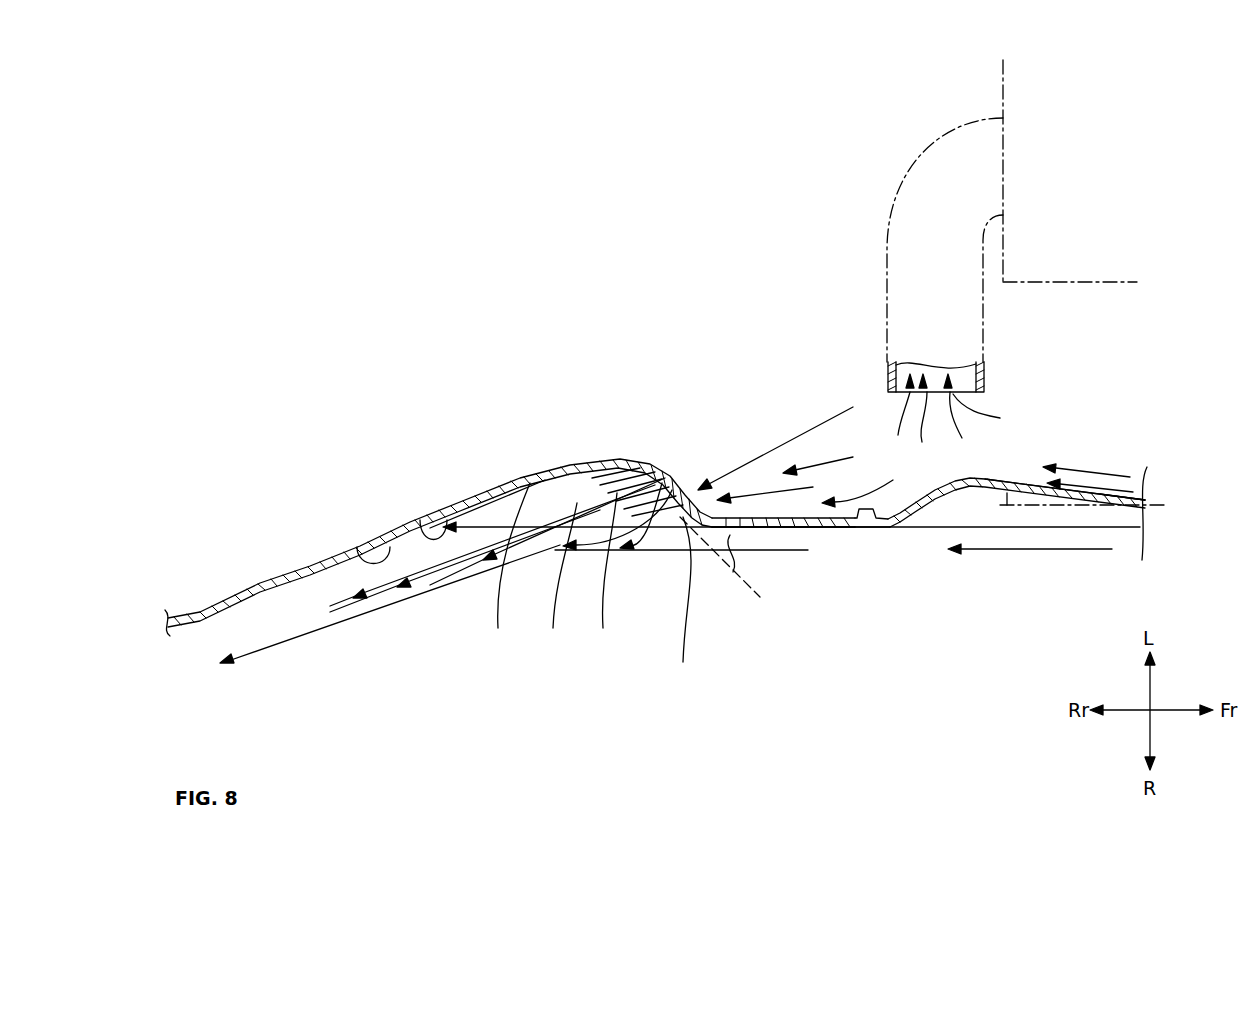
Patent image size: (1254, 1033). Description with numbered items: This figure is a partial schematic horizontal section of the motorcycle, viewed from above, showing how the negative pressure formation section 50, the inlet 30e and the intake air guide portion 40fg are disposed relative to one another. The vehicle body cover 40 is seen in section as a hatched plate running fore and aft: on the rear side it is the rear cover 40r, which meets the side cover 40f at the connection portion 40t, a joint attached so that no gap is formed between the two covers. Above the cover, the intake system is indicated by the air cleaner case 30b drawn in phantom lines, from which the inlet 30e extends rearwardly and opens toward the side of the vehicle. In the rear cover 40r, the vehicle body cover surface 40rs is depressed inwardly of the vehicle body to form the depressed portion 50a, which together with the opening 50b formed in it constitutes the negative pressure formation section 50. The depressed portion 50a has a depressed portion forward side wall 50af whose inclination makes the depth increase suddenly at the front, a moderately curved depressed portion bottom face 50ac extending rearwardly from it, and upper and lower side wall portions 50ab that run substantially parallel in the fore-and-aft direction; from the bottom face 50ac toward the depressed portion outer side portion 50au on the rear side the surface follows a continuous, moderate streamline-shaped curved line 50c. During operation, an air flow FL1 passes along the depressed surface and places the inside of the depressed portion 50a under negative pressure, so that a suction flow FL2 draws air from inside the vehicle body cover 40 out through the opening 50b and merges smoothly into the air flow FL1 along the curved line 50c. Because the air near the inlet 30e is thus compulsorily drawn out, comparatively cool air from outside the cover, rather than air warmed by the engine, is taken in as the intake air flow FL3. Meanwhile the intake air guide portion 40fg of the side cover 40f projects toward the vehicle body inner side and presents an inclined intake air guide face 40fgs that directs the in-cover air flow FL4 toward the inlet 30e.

The air cleaner case 30b is at (1003, 90).
The inlet 30e is at (970, 393).
The vehicle body cover 40 is at (677, 570).
The rear cover 40r is at (783, 533).
The vehicle body cover surface 40rs is at (820, 532).
The connection portion 40t is at (870, 530).
The side cover 40f is at (924, 532).
The intake air guide portion 40fg is at (1033, 500).
The intake air guide face 40fgs is at (1140, 498).
The negative pressure formation section 50 is at (438, 581).
The depressed portion 50a is at (572, 579).
The depressed portion bottom face 50ac is at (498, 567).
The upper and lower side wall portions 50ab is at (552, 576).
The depressed portion forward side wall 50af is at (605, 572).
The opening 50b is at (671, 603).
The streamline-shaped curved line 50c is at (420, 520).
The depressed portion outer side portion 50au is at (357, 547).
The air flow FL1 is at (287, 640).
The suction flow FL2 is at (745, 462).
The intake air flow FL3 is at (948, 427).
The in-cover air flow FL4 is at (1092, 466).